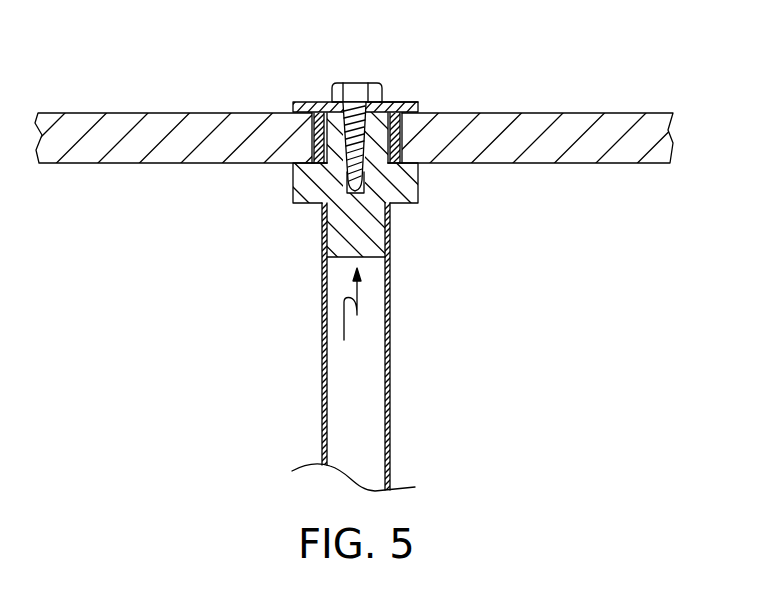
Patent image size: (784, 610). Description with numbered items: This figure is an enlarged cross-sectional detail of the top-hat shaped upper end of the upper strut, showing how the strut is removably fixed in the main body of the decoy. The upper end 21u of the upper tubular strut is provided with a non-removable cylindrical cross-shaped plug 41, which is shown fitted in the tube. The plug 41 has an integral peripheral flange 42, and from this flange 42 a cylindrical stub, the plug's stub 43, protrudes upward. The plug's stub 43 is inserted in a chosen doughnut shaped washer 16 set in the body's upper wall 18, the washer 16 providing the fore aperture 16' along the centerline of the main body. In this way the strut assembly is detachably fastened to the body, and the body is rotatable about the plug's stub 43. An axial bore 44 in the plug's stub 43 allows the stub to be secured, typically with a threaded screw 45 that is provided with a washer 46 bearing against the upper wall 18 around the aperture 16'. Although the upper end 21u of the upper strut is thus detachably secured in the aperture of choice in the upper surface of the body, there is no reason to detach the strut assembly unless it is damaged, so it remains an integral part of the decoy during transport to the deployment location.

The upper wall 18 is at (115, 163).
The doughnut shaped washer 16 is at (319, 124).
The fore aperture 16' is at (339, 117).
The peripheral flange 42 is at (418, 182).
The plug's stub 43 is at (398, 140).
The axial bore 44 is at (358, 192).
The threaded screw 45 is at (355, 83).
The washer 46 is at (398, 102).
The upper end of the upper tubular strut 21u is at (391, 328).
The cylindrical cross-shaped plug 41 is at (347, 319).